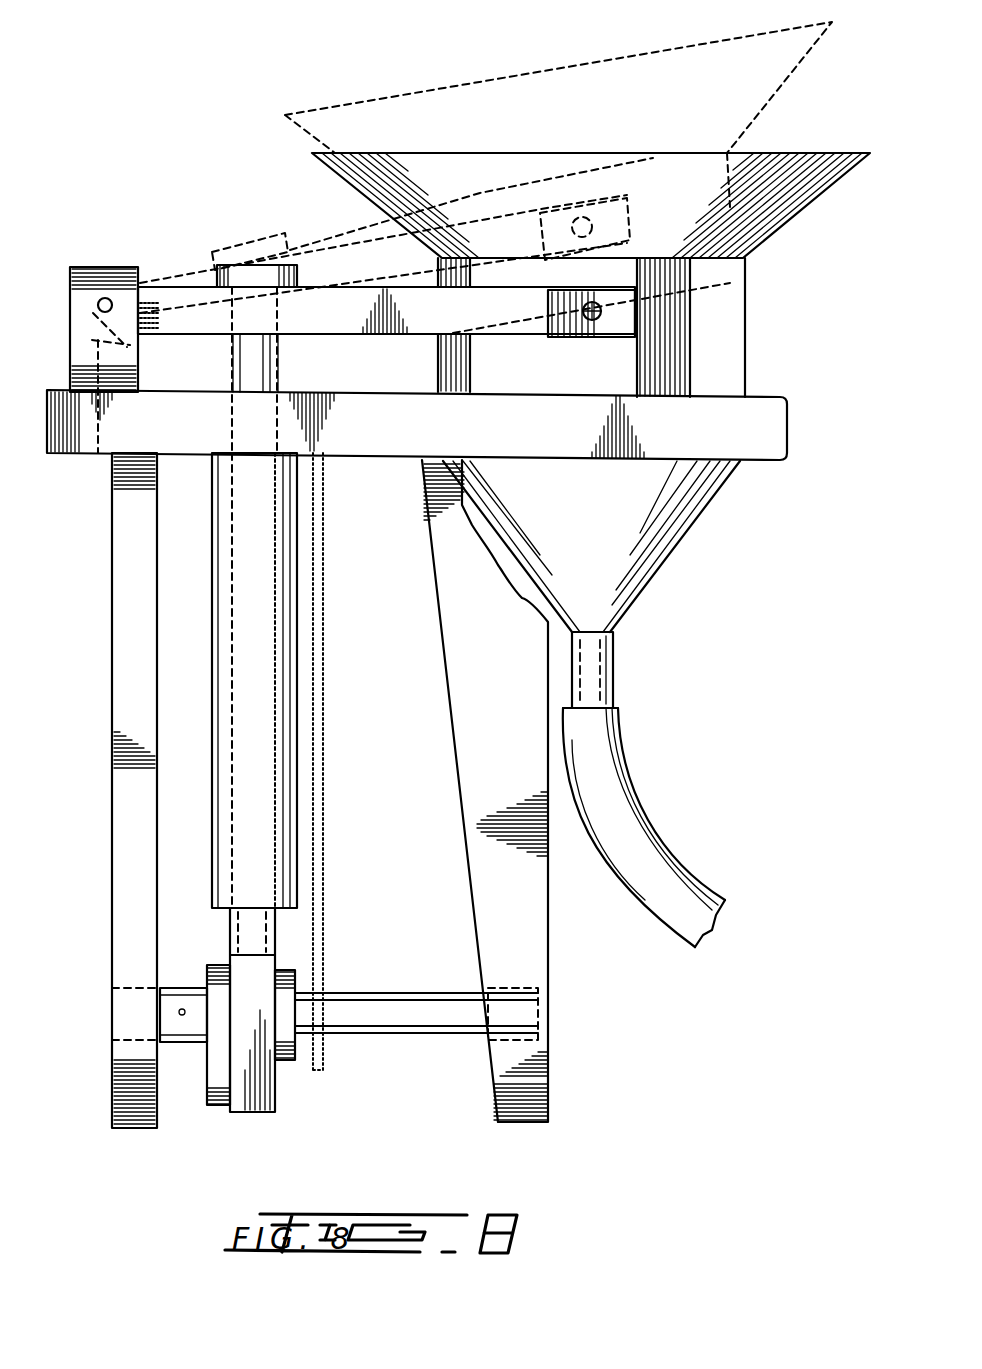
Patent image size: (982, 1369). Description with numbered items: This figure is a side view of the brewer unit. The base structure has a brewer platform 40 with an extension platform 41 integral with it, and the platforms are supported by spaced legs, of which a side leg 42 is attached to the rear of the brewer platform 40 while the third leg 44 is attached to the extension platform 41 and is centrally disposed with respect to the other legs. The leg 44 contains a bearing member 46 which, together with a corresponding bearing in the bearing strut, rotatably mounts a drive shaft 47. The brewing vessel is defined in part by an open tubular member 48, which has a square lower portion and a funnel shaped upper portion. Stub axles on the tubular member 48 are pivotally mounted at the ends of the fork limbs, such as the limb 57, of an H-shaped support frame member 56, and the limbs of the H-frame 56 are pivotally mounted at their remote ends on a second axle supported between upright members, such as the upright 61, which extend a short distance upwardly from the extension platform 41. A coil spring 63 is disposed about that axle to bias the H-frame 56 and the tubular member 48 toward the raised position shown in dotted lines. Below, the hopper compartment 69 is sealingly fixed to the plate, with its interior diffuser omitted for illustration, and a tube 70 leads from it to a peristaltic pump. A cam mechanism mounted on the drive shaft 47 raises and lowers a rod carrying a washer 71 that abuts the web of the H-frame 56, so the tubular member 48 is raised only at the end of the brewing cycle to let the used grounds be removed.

The brewer platform 40 is at (757, 462).
The extension platform 41 is at (90, 455).
The leg member 42 is at (548, 960).
The leg member 44 is at (112, 715).
The bearing member 46 is at (112, 1055).
The drive shaft 47 is at (400, 1036).
The tubular member 48 is at (813, 217).
The H-shaped support frame member 56 is at (318, 337).
The fork limb 57 is at (637, 302).
The upright member 61 is at (75, 285).
The coil spring 63 is at (143, 352).
The hopper compartment 69 is at (667, 557).
The tube 70 is at (665, 847).
The washer 71 is at (215, 278).